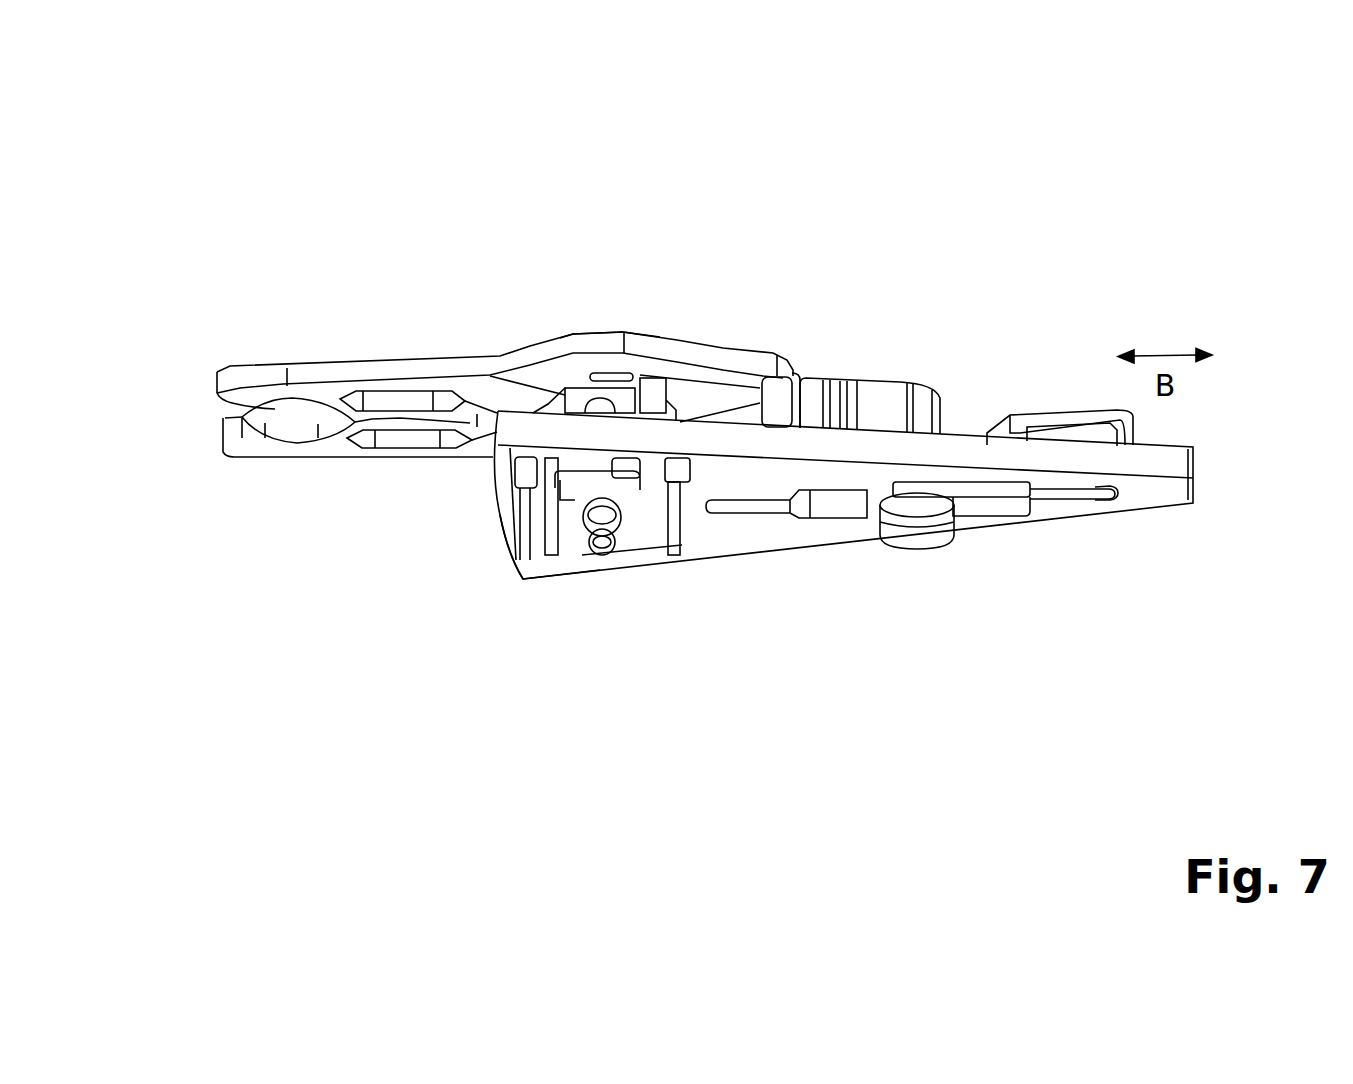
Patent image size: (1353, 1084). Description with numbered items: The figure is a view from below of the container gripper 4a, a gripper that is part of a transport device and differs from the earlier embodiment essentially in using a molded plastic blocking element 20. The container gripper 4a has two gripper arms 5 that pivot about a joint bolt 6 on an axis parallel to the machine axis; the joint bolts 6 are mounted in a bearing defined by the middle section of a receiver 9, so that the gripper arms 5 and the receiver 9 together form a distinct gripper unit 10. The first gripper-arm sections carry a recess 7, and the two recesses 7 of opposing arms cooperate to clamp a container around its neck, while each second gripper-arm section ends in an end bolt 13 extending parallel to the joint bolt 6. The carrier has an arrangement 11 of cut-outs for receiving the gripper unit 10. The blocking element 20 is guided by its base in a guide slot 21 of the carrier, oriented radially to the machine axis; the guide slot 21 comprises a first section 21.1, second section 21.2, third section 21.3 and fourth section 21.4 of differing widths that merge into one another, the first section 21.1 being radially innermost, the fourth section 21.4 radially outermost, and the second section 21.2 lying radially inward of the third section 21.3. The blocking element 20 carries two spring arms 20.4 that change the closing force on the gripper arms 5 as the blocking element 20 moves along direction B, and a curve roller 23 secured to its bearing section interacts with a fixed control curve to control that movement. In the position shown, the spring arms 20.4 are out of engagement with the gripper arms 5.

The container gripper 4a is at (420, 275).
The gripper arms 5 is at (326, 363).
The recess 7 is at (292, 398).
The gripper unit 10 is at (617, 305).
The end bolt 13 is at (793, 373).
The blocking element 20 is at (953, 393).
The spring arms 20.4 is at (878, 400).
The guide slot 21 is at (1053, 498).
The first section 21.1 is at (1093, 488).
The second section 21.2 is at (985, 505).
The third section 21.3 is at (847, 505).
The fourth section 21.4 is at (752, 512).
The curve roller 23 is at (915, 533).
The receiver 9 is at (570, 530).
The joint bolt 6 is at (610, 523).
The arrangement of cut-outs 11 is at (525, 568).